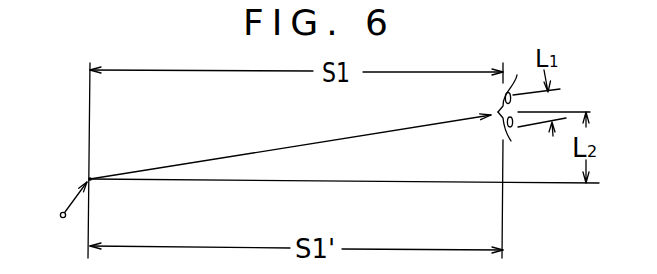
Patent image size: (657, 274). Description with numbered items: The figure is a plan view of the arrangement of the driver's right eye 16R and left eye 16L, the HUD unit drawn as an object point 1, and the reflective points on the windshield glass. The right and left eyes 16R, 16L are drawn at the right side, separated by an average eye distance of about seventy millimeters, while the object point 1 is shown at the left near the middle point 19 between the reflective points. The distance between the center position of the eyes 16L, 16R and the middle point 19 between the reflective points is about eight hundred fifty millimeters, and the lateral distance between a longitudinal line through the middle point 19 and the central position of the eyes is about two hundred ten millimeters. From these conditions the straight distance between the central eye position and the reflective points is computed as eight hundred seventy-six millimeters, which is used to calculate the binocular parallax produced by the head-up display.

The middle point 19 is at (88, 178).
The object point 1 is at (61, 213).
The right eye 16R is at (517, 75).
The left eye 16L is at (512, 128).